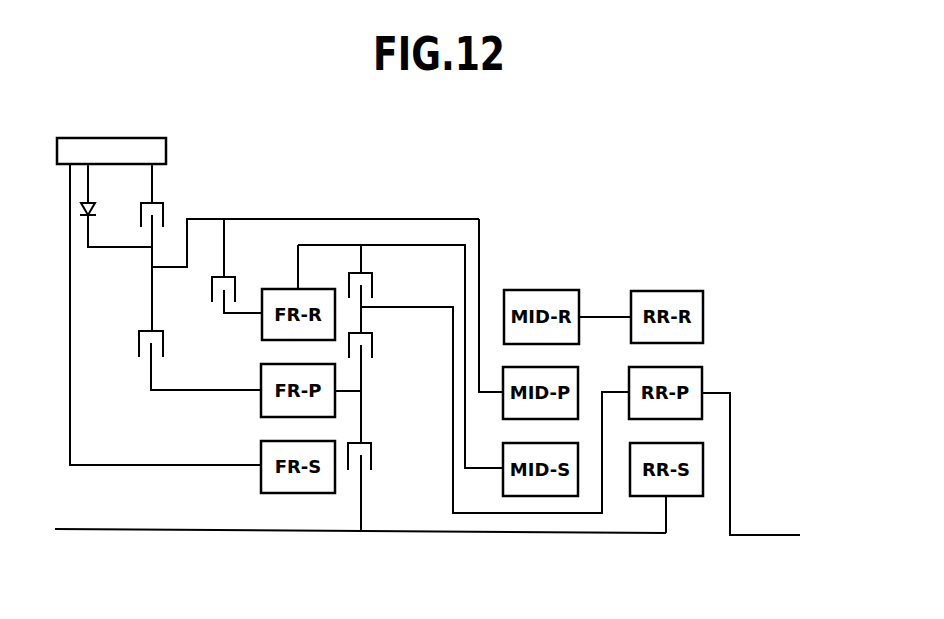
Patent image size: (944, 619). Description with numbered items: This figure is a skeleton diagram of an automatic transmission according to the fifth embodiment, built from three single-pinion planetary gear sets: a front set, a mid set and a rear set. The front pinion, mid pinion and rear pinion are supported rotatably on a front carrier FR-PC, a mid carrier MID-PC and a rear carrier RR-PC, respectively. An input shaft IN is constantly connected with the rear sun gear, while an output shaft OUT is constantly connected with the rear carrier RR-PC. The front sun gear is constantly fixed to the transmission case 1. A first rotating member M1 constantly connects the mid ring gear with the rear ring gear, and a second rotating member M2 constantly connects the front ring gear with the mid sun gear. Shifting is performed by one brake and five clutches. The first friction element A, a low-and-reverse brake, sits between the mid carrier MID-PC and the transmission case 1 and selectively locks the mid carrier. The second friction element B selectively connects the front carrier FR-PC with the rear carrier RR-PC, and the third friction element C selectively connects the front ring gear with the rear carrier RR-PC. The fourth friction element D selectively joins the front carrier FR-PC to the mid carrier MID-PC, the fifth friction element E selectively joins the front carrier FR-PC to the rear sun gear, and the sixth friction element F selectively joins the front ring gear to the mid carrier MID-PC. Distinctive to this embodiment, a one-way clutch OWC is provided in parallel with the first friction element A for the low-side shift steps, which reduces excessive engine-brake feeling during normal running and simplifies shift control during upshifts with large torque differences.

The transmission case 1 is at (167, 153).
The one-way clutch OWC is at (93, 205).
The first friction element A is at (163, 213).
The second friction element B is at (372, 347).
The third friction element C is at (372, 287).
The fourth friction element D is at (163, 346).
The fifth friction element E is at (371, 457).
The sixth friction element F is at (235, 290).
The first rotating member M1 is at (603, 316).
The second rotating member M2 is at (425, 245).
The mid carrier MID-PC is at (480, 245).
The front carrier FR-PC is at (203, 392).
The rear carrier RR-PC is at (713, 393).
The input shaft IN is at (86, 532).
The output shaft OUT is at (780, 537).